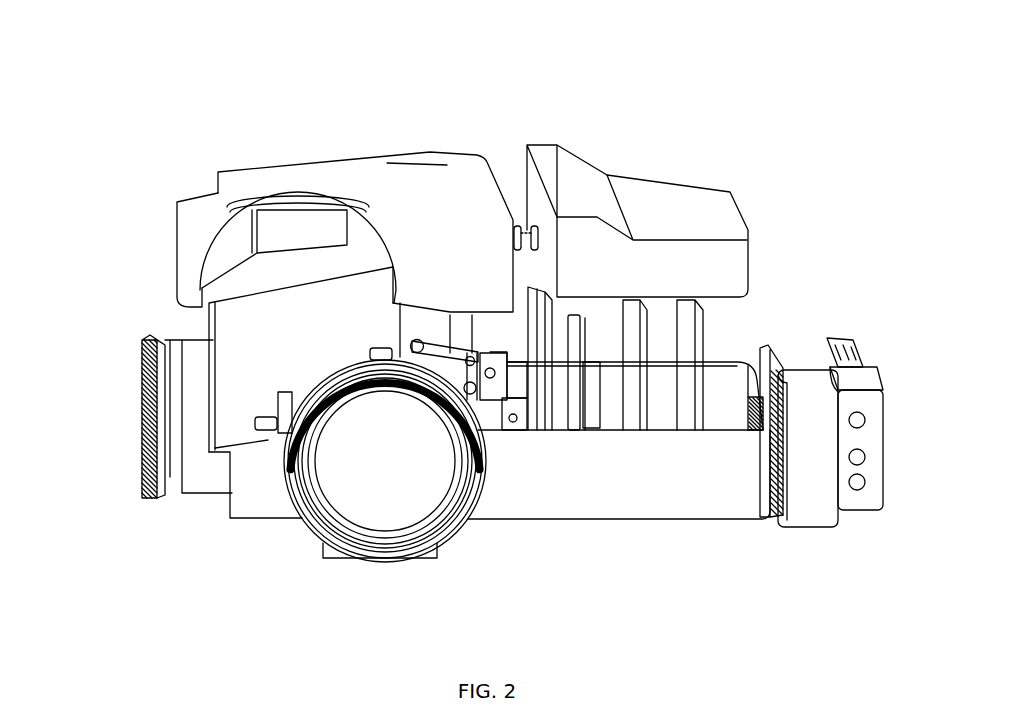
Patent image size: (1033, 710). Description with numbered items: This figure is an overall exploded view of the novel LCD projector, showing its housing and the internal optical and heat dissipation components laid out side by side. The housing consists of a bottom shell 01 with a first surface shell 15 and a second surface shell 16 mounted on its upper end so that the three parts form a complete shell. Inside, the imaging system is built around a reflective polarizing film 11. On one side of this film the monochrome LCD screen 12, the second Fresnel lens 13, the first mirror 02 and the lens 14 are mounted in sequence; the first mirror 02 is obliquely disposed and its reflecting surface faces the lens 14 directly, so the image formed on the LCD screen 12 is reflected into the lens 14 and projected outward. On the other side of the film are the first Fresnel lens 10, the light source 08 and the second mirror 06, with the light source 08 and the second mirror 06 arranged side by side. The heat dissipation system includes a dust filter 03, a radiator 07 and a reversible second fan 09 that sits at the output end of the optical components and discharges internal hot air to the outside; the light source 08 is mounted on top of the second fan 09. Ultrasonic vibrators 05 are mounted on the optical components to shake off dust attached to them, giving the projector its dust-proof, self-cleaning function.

The bottom shell 01 is at (265, 495).
The first mirror 02 is at (140, 397).
The filter 03 is at (193, 378).
The ultrasonic vibrators 05 is at (522, 203).
The second mirror 06 is at (773, 357).
The radiator 07 is at (838, 338).
The light source 08 is at (797, 358).
The second fan 09 is at (805, 487).
The first Fresnel lens 10 is at (683, 383).
The reflective polarizing film 11 is at (633, 370).
The LCD screen 12 is at (540, 340).
The second Fresnel lens 13 is at (466, 385).
The lens 14 is at (385, 468).
The first surface shell 15 is at (358, 178).
The second surface shell 16 is at (647, 207).